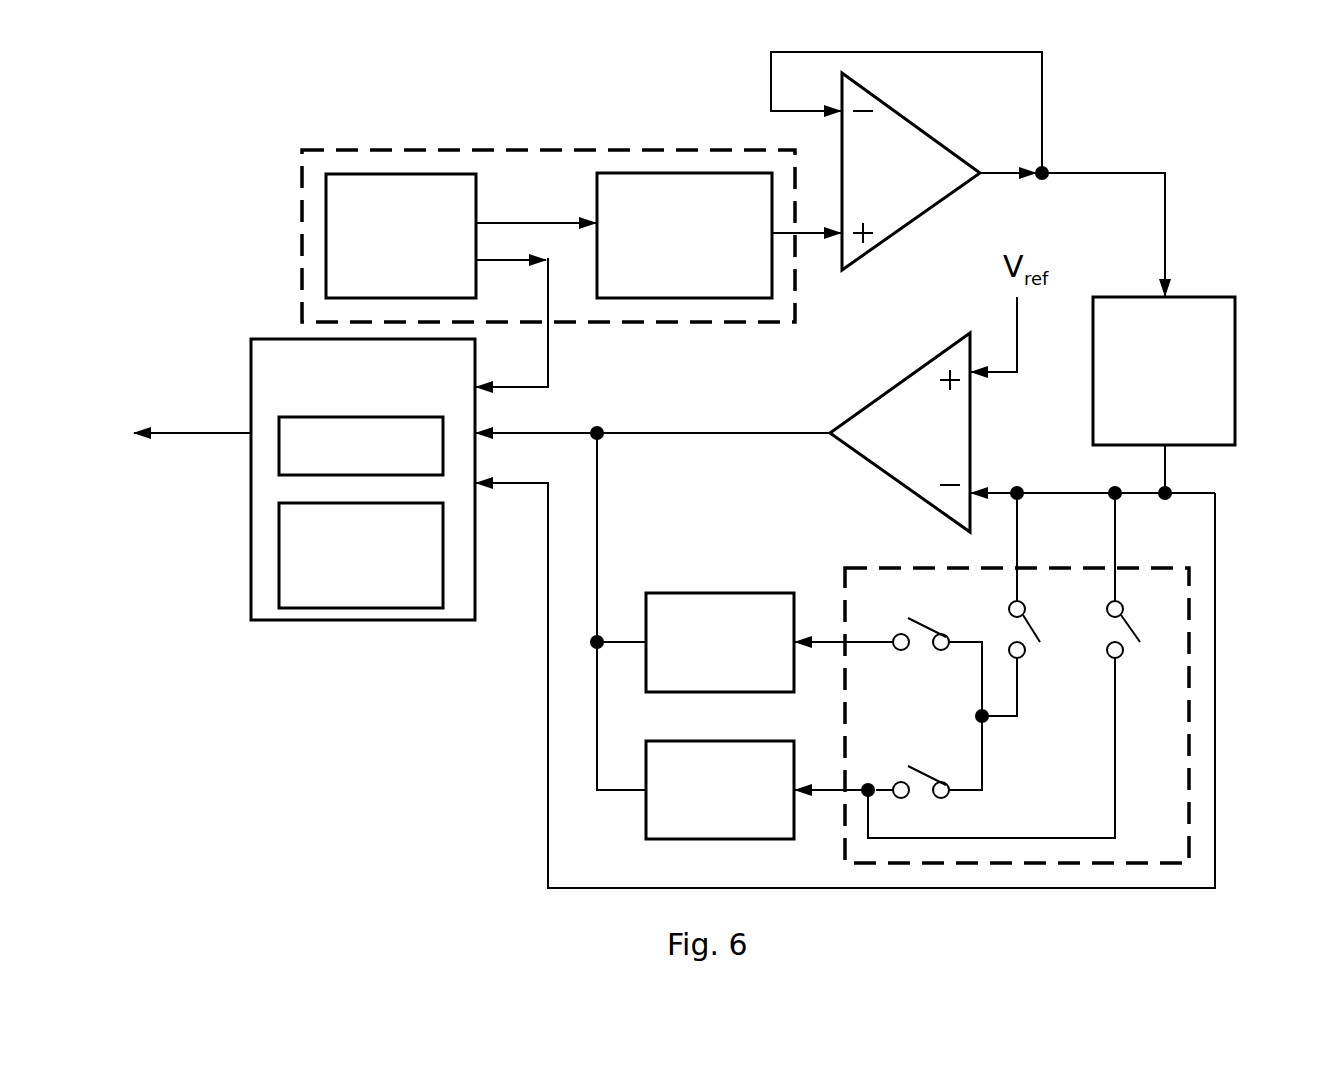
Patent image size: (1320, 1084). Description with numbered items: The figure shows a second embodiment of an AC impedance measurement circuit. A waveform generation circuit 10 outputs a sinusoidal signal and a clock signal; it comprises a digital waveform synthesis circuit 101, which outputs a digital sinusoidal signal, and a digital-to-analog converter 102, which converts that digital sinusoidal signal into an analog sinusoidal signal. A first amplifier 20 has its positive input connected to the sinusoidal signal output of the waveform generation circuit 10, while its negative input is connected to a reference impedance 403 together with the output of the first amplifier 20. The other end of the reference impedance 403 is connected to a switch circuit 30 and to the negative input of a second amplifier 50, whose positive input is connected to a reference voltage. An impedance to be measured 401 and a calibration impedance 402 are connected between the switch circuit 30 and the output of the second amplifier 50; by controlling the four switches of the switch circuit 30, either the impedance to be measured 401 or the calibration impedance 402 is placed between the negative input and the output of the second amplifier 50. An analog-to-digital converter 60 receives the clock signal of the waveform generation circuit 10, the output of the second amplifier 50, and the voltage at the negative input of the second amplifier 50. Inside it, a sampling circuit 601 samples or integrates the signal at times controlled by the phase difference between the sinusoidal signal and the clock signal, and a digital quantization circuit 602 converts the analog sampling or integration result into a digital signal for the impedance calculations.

The waveform generation circuit 10 is at (550, 150).
The digital waveform synthesis circuit 101 is at (347, 193).
The digital-to-analog converter 102 is at (667, 180).
The first amplifier 20 is at (882, 128).
The second amplifier 50 is at (927, 388).
The analog-to-digital converter 60 is at (304, 448).
The sampling circuit 601 is at (303, 433).
The digital quantization circuit 602 is at (293, 560).
The switch circuit 30 is at (1173, 568).
The impedance to be measured 401 is at (720, 642).
The calibration impedance 402 is at (720, 790).
The reference impedance 403 is at (1164, 371).